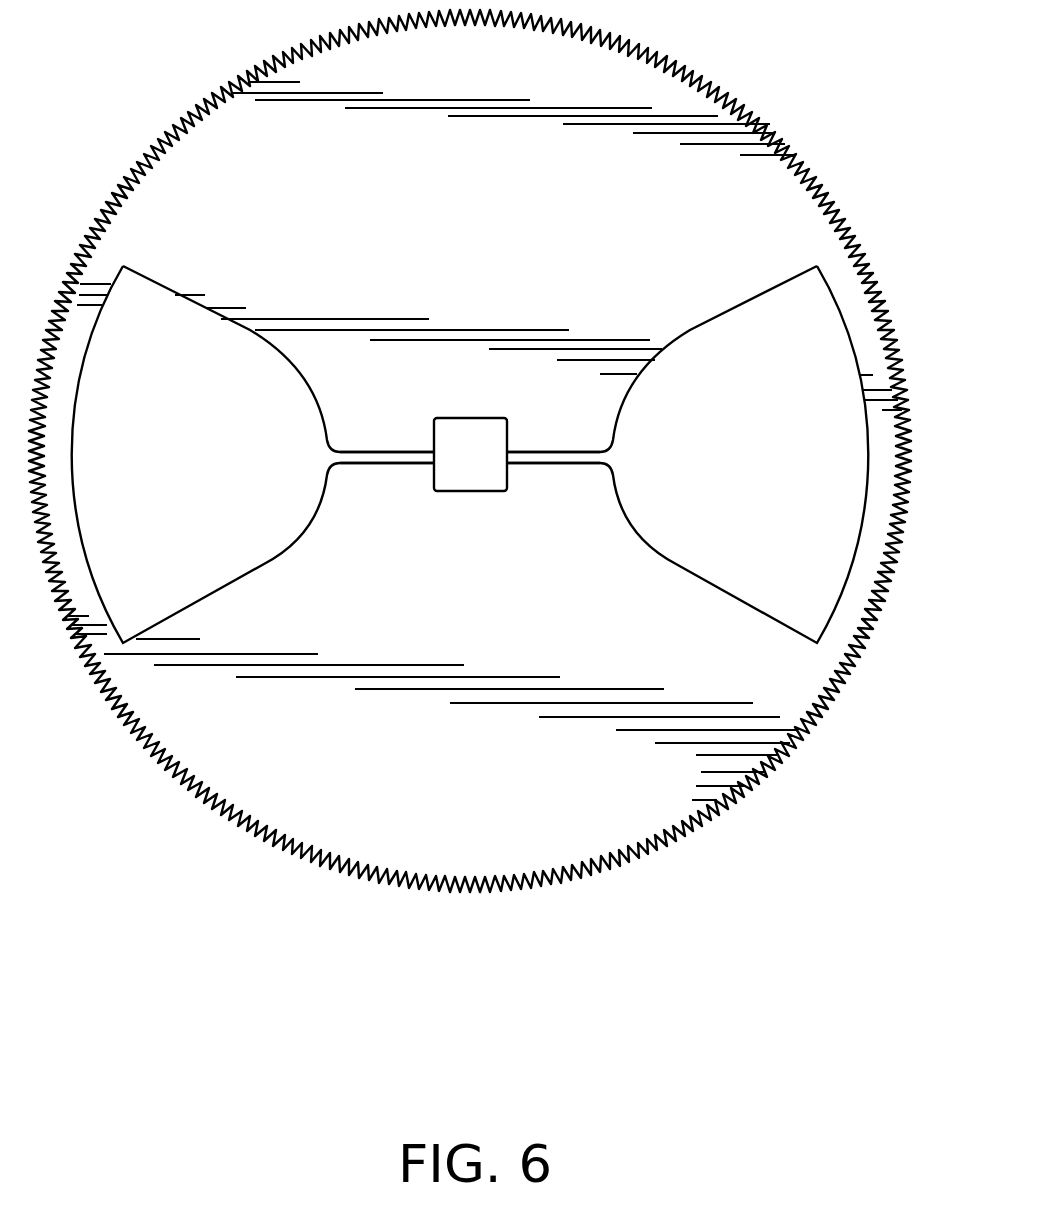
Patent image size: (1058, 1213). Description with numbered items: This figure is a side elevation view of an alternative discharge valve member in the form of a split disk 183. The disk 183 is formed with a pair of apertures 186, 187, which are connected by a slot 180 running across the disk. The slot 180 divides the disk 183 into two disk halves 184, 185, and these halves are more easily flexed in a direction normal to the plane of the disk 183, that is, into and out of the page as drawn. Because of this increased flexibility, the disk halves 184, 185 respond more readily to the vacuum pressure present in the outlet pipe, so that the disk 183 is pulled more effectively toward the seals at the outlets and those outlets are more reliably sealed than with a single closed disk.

The slot 180 is at (386, 465).
The split disk 183 is at (732, 703).
The disk half 184 is at (642, 87).
The disk half 185 is at (278, 800).
The aperture 186 is at (184, 299).
The aperture 187 is at (683, 341).